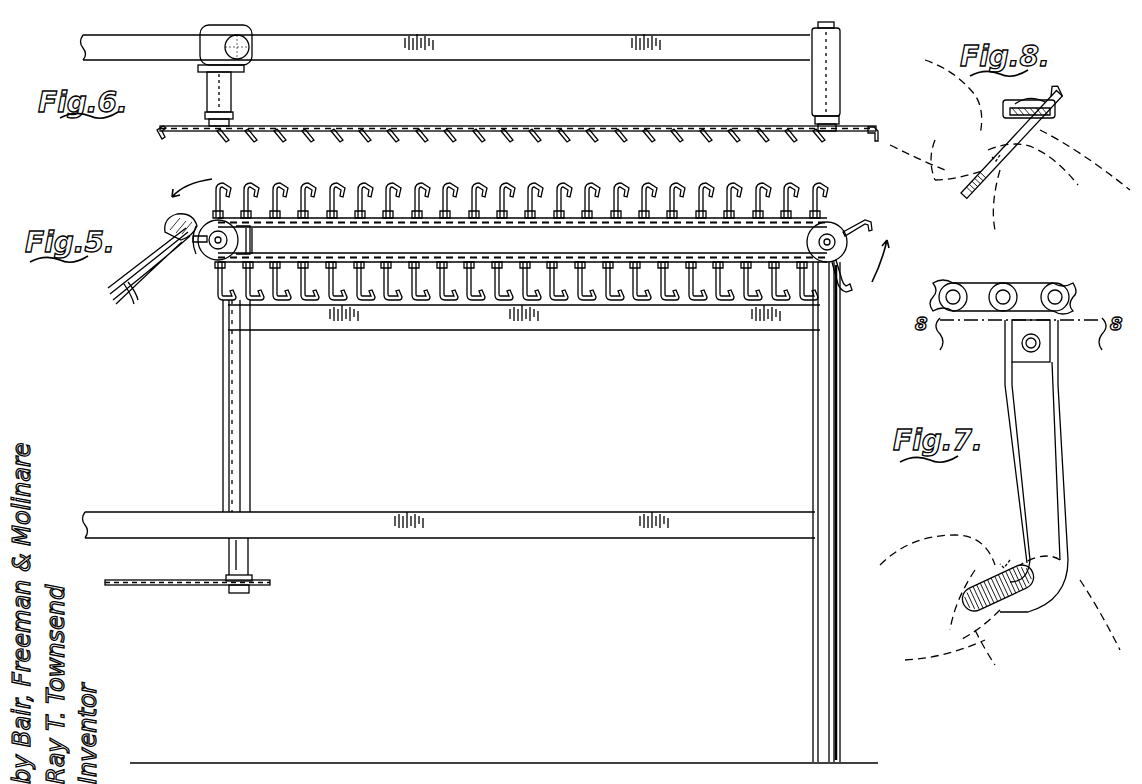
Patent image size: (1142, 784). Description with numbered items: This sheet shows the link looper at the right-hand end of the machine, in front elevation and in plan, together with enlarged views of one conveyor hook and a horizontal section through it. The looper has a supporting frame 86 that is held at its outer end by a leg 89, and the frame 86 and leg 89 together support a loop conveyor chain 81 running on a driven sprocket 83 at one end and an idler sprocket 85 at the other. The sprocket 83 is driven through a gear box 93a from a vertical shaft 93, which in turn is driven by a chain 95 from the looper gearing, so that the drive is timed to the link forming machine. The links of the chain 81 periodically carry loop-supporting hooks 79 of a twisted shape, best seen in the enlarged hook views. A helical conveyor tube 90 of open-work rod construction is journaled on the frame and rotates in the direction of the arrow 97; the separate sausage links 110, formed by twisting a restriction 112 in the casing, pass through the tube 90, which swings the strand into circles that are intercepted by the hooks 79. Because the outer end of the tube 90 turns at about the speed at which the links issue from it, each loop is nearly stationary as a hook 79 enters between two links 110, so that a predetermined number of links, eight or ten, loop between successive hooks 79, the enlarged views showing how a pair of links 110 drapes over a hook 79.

In FIG. 6, the loop-supporting hooks 79 is at (277, 136).
In FIG. 5, the loop-supporting hooks 79 is at (420, 193).
In FIG. 7, the loop-supporting hooks 79 is at (1062, 462).
In FIG. 8, the loop-supporting hooks 79 is at (1045, 118).
In FIG. 6, the loop conveyor chain 81 is at (682, 126).
In FIG. 5, the loop conveyor chain 81 is at (610, 222).
In FIG. 7, the loop conveyor chain 81 is at (1000, 278).
In FIG. 8, the loop conveyor chain 81 is at (1016, 106).
In FIG. 5, the sprocket 83 is at (228, 238).
In FIG. 5, the idler sprocket 85 is at (806, 242).
In FIG. 6, the supporting frame 86 is at (553, 55).
In FIG. 5, the supporting frame 86 is at (445, 320).
In FIG. 5, the leg 89 is at (813, 650).
In FIG. 5, the helical conveyor tube 90 is at (152, 300).
In FIG. 5, the vertical shaft 93 is at (243, 593).
In FIG. 6, the gear box 93a is at (200, 60).
In FIG. 5, the gear box 93a is at (255, 248).
In FIG. 5, the chain 95 is at (140, 585).
In FIG. 5, the arrow 97 is at (151, 230).
In FIG. 7, the links 110 is at (933, 644).
In FIG. 8, the links 110 is at (986, 203).
In FIG. 7, the restriction 112 is at (1001, 568).
In FIG. 8, the restriction 112 is at (1005, 162).